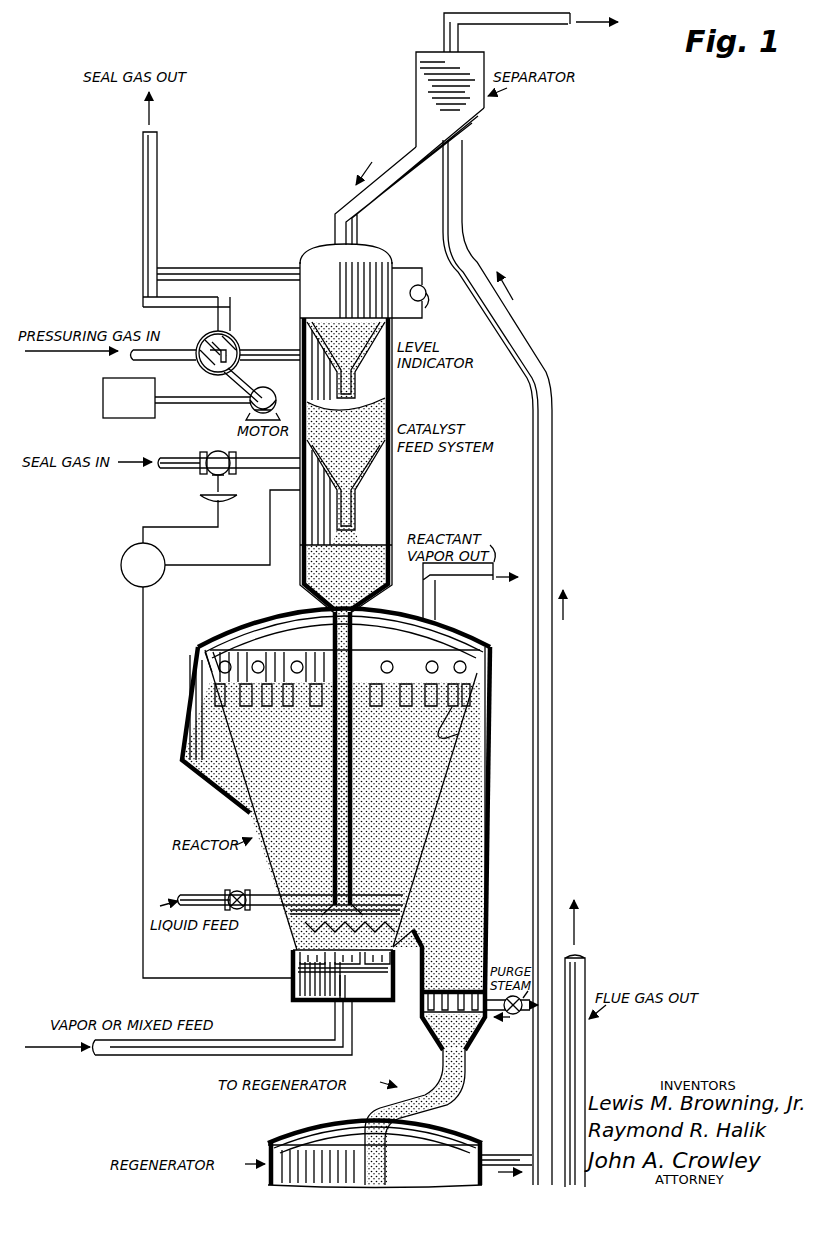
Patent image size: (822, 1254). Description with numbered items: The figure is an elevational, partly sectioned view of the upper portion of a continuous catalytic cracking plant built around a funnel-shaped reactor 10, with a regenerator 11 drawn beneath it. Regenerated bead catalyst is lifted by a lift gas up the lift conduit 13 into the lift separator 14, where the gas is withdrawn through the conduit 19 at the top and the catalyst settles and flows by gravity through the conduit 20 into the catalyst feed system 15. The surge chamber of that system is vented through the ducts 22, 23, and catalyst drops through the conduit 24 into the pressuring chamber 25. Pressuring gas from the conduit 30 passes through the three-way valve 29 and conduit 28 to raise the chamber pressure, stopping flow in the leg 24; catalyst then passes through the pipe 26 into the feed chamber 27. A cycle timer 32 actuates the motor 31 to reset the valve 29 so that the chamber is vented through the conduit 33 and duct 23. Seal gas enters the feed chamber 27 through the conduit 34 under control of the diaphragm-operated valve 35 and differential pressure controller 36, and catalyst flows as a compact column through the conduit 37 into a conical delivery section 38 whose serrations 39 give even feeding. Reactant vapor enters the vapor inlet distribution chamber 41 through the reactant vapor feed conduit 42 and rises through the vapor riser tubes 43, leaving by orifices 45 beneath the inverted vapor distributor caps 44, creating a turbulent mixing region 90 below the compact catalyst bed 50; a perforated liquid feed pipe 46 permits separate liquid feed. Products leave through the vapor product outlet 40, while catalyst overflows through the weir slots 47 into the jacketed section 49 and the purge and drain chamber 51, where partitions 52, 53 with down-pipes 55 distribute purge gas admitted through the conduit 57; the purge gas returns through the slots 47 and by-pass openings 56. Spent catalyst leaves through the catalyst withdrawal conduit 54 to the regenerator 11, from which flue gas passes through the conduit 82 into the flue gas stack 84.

The reactor 10 is at (251, 812).
The regenerator 11 is at (268, 1150).
The lift conduit 13 is at (553, 472).
The lift separator 14 is at (418, 88).
The catalyst feed system 15 is at (392, 496).
The conduit 19 is at (546, 27).
The conduit 20 is at (406, 157).
The duct 22 is at (243, 268).
The duct 23 is at (158, 175).
The conduit 24 is at (355, 368).
The pressuring chamber 25 is at (395, 403).
The pipe 26 is at (355, 502).
The feed chamber 27 is at (303, 561).
The conduit 28 is at (258, 350).
The three-way valve 29 is at (206, 368).
The conduit 30 is at (134, 355).
The motor 31 is at (278, 388).
The cycle timer 32 is at (103, 400).
The conduit 33 is at (232, 300).
The conduit 34 is at (244, 472).
The diaphragm-operated valve 35 is at (225, 442).
The differential pressure controller 36 is at (123, 551).
The conduit 37 is at (352, 635).
The conical delivery section 38 is at (308, 918).
The serrations 39 is at (305, 935).
The vapor product outlet 40 is at (458, 590).
The vapor inlet distribution chamber 41 is at (293, 988).
The reactant vapor feed conduit 42 is at (293, 1032).
The vapor riser tubes 43 is at (376, 968).
The inverted vapor distributor caps 44 is at (393, 952).
The orifices 45 is at (342, 962).
The perforated liquid feed pipe 46 is at (258, 893).
The weir slots 47 is at (462, 733).
The jacketed section 49 is at (190, 702).
The catalyst bed 50 is at (422, 790).
The catalyst purge and drain chamber 51 is at (487, 906).
The partition 52 is at (487, 953).
The partition 53 is at (425, 1022).
The catalyst withdrawal conduit 54 is at (454, 1097).
The down-pipes 55 is at (425, 1002).
The by-pass openings 56 is at (213, 648).
The conduit 57 is at (528, 1017).
The conduit 82 is at (518, 1153).
The flue gas stack 84 is at (580, 1044).
The mixing region 90 is at (413, 945).